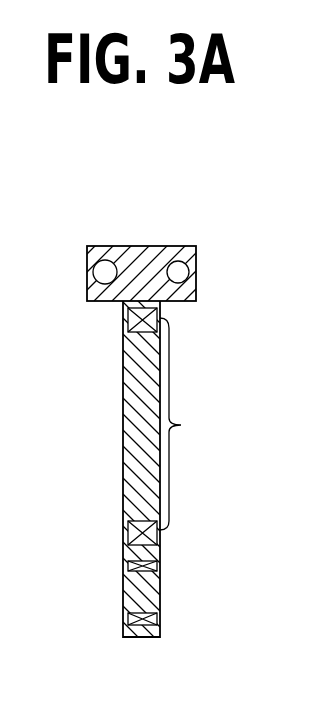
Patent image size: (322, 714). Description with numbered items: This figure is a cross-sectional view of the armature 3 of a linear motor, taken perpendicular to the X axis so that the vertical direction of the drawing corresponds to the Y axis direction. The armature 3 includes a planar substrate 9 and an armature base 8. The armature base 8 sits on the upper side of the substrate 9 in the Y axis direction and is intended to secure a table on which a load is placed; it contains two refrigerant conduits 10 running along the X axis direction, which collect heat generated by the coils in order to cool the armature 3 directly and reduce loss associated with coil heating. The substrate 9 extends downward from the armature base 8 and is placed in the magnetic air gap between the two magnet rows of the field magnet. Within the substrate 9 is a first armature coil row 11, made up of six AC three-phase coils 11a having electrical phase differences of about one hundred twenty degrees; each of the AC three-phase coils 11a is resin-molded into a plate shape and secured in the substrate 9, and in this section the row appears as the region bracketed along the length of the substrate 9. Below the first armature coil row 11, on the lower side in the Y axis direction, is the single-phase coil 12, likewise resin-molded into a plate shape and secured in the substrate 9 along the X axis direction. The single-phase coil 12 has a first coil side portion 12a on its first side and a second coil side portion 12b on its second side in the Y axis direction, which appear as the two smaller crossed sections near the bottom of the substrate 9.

The armature 3 is at (83, 214).
The armature base 8 is at (137, 246).
The substrate 9 is at (130, 423).
The refrigerant conduits 10 is at (184, 279).
The first armature coil row 11 is at (107, 316).
The AC three-phase coils 11a is at (196, 424).
The single-phase coil 12 is at (126, 592).
The first coil side portion 12a is at (128, 620).
The second coil side portion 12b is at (128, 566).